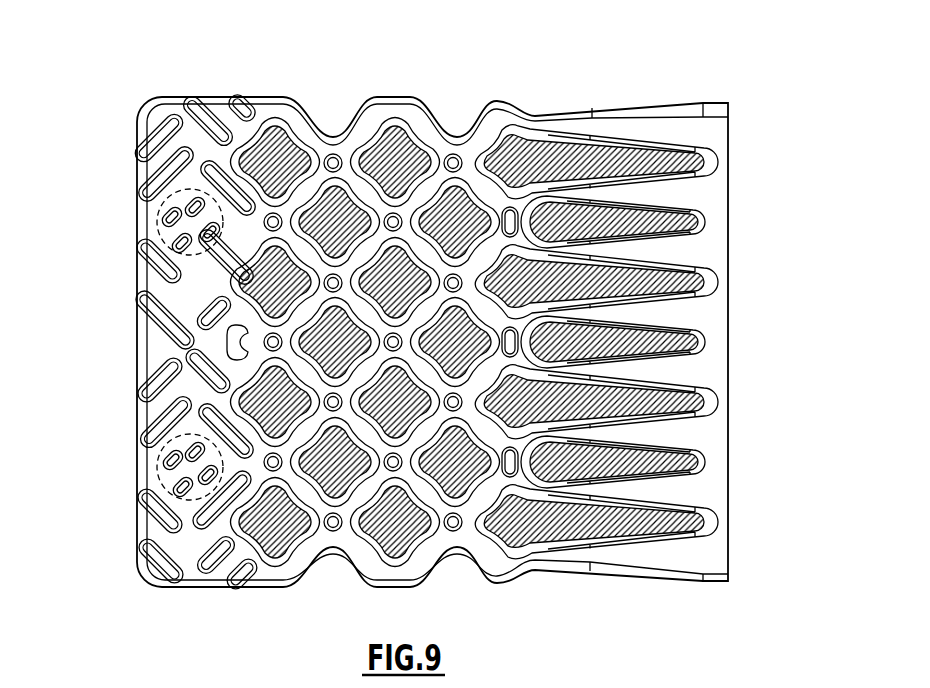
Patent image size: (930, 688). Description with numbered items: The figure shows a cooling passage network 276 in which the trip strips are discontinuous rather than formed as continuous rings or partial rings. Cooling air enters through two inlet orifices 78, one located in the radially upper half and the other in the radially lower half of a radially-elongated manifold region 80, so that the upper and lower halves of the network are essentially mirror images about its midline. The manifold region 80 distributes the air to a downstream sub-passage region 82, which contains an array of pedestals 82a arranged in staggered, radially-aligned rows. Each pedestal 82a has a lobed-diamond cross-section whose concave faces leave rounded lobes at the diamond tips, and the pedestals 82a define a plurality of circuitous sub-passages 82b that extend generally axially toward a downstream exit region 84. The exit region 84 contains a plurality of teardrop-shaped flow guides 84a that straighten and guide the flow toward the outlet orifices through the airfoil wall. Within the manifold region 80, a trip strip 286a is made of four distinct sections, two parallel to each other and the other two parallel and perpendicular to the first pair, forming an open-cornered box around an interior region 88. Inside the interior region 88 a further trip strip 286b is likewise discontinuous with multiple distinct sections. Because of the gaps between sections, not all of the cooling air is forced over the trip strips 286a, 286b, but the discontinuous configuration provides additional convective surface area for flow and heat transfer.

The cooling passage network 276 is at (673, 592).
The inlet orifices 78 is at (157, 228).
The manifold region 80 is at (150, 84).
The sub-passage region 82 is at (245, 84).
The pedestals 82a is at (403, 525).
The sub-passages 82b is at (362, 493).
The exit region 84 is at (457, 84).
The flow guides 84a is at (533, 520).
The interior region 88 is at (217, 498).
The trip strip 286a is at (207, 413).
The trip strip 286b is at (158, 473).